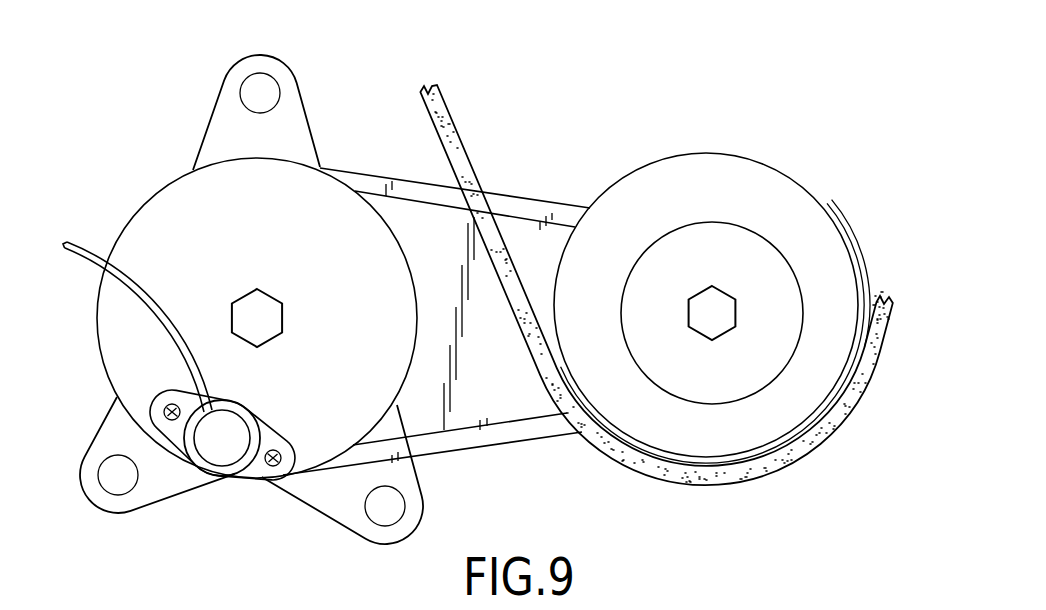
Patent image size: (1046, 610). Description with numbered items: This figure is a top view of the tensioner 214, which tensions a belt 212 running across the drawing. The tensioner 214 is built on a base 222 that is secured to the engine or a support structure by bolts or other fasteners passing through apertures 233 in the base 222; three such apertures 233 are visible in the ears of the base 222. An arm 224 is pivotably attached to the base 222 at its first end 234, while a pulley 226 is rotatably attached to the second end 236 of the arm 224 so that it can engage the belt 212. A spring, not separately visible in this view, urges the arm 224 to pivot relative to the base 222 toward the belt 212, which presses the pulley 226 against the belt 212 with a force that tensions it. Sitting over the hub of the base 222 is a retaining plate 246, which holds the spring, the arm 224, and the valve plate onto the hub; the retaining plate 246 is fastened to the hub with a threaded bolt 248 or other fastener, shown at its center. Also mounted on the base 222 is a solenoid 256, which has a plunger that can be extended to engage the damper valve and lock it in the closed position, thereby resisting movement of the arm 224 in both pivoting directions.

The belt 212 is at (468, 148).
The tensioner 214 is at (652, 134).
The base 222 is at (122, 428).
The arm 224 is at (507, 393).
The pulley 226 is at (798, 197).
The apertures 233 is at (280, 90).
The first end 234 is at (397, 190).
The second end 236 is at (548, 233).
The retaining plate 246 is at (153, 207).
The threaded bolt 248 is at (270, 310).
The solenoid 256 is at (227, 453).